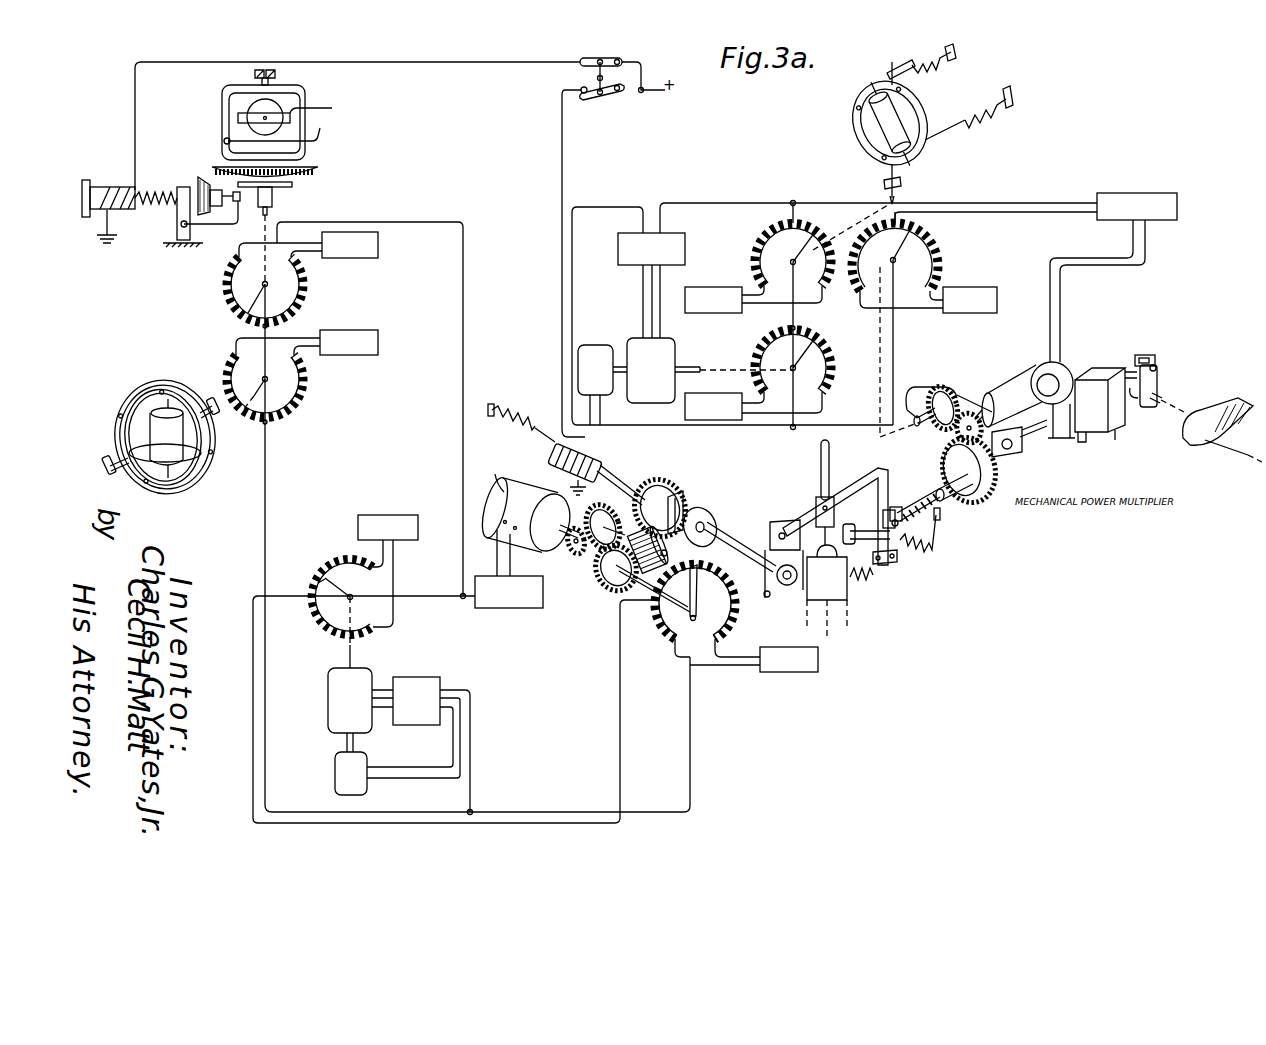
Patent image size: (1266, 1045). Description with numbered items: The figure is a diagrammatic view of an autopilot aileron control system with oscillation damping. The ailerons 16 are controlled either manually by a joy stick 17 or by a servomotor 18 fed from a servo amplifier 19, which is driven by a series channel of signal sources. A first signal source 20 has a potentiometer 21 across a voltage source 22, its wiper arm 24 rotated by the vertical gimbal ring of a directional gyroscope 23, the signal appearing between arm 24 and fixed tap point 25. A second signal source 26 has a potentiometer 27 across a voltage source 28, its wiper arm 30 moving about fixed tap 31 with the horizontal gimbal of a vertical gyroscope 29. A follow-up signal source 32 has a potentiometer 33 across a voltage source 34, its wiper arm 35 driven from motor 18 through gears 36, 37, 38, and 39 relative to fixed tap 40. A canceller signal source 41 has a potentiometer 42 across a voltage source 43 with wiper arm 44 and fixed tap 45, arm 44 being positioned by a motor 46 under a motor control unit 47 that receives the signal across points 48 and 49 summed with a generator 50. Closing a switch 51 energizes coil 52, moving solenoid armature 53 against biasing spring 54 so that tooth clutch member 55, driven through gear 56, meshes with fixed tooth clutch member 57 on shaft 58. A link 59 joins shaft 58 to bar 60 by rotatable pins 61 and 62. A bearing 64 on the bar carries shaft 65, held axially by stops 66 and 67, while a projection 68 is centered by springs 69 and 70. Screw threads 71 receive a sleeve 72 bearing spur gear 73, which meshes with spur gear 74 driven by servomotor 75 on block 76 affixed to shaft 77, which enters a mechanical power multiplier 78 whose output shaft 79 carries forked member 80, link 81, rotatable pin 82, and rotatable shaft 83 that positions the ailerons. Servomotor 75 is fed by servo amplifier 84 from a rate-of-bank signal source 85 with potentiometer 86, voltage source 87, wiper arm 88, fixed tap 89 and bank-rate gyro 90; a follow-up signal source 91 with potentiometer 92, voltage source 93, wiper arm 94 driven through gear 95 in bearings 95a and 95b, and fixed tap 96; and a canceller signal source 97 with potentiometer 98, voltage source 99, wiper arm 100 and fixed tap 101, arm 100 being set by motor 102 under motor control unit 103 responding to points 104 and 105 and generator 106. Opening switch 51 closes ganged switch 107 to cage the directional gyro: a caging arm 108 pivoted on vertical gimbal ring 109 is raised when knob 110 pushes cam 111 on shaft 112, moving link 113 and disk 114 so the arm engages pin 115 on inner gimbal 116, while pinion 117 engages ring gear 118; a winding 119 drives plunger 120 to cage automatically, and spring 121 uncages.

The ailerons 16 is at (1217, 408).
The joy stick 17 is at (820, 471).
The servomotor 18 is at (523, 518).
The servo amplifier 19 is at (514, 608).
The first signal source 20 is at (315, 327).
The potentiometer 21 is at (302, 303).
The voltage source 22 is at (378, 245).
The directional gyroscope 23 is at (224, 173).
The potentiometer wiper arm 24 is at (258, 296).
The fixed tap point 25 is at (262, 327).
The second signal source 26 is at (303, 369).
The potentiometer 27 is at (302, 407).
The voltage source 28 is at (358, 330).
The vertical gyroscope 29 is at (126, 388).
The potentiometer wiper arm 30 is at (270, 386).
The fixed tap 31 is at (268, 425).
The follow-up signal source 32 is at (737, 618).
The potentiometer 33 is at (667, 637).
The voltage source 34 is at (818, 653).
The potentiometer wiper arm 35 is at (696, 616).
The gear 36 is at (569, 552).
The gear 37 is at (604, 504).
The gear 38 is at (662, 553).
The gear 39 is at (610, 586).
The fixed tap 40 is at (697, 575).
The canceller signal source 41 is at (349, 558).
The potentiometer 42 is at (326, 565).
The voltage source 43 is at (386, 515).
The wiper arm 44 is at (345, 590).
The fixed tap 45 is at (318, 583).
The motor 46 is at (350, 674).
The motor control unit 47 is at (412, 677).
The point 48 is at (472, 810).
The point 49 is at (461, 594).
The generator 50 is at (351, 773).
The switch 51 is at (620, 98).
The coil 52 is at (590, 455).
The solenoid armature 53 is at (617, 469).
The biasing spring 54 is at (511, 408).
The axially movable tooth clutch member 55 is at (682, 490).
The gear 56 is at (662, 480).
The axially fixed tooth clutch member 57 is at (702, 508).
The shaft 58 is at (747, 548).
The link 59 is at (772, 537).
The bar 60 is at (858, 487).
The rotatable pin 61 is at (815, 518).
The rotatable pin 62 is at (768, 598).
The bearing 64 is at (889, 510).
The shaft 65 is at (897, 507).
The stop 66 is at (872, 531).
The stop 67 is at (898, 522).
The projection 68 is at (886, 563).
The spring 69 is at (861, 578).
The spring 70 is at (924, 540).
The screw threads 71 is at (947, 496).
The sleeve 72 is at (968, 490).
The spur gear 73 is at (988, 495).
The spur gear 74 is at (932, 492).
The servomotor 75 is at (1062, 368).
The block 76 is at (1065, 440).
The shaft 77 is at (1036, 435).
The mechanical power multiplier 78 is at (1120, 430).
The output shaft 79 is at (1128, 373).
The forked member 80 is at (1147, 355).
The link 81 is at (1157, 385).
The rotatable pin 82 is at (1157, 362).
The rotatable shaft 83 is at (1155, 405).
The servo amplifier 84 is at (1136, 193).
The rate-of-bank signal source 85 is at (758, 266).
The potentiometer 86 is at (752, 270).
The voltage source 87 is at (724, 313).
The wiper arm 88 is at (800, 250).
The fixed tap 89 is at (790, 216).
The spring loaded bank-rate gyro 90 is at (920, 110).
The follow-up signal source 91 is at (929, 262).
The potentiometer 92 is at (862, 285).
The voltage source 93 is at (997, 293).
The potentiometer wiper arm 94 is at (898, 250).
The gear 95 is at (937, 388).
The bearing 95a is at (928, 426).
The bearing 95b is at (967, 410).
The fixed tap 96 is at (905, 223).
The canceller signal source 97 is at (757, 364).
The potentiometer 98 is at (830, 362).
The voltage source 99 is at (685, 409).
The potentiometer wiper arm 100 is at (796, 360).
The fixed tap 101 is at (797, 331).
The motor 102 is at (710, 370).
The motor control unit 103 is at (618, 242).
The point 104 is at (792, 200).
The point 105 is at (792, 430).
The generator 106 is at (602, 385).
The switch 107 is at (580, 70).
The caging arm 108 is at (320, 135).
The vertical gimbal ring 109 is at (296, 86).
The knob 110 is at (88, 180).
The cam 111 is at (213, 188).
The shaft 112 is at (183, 187).
The link 113 is at (236, 226).
The disk 114 is at (293, 187).
The pin 115 is at (327, 108).
The inner gimbal 116 is at (250, 114).
The pinion 117 is at (202, 177).
The ring gear 118 is at (318, 166).
The winding 119 is at (110, 213).
The plunger 120 is at (105, 187).
The spring 121 is at (145, 190).